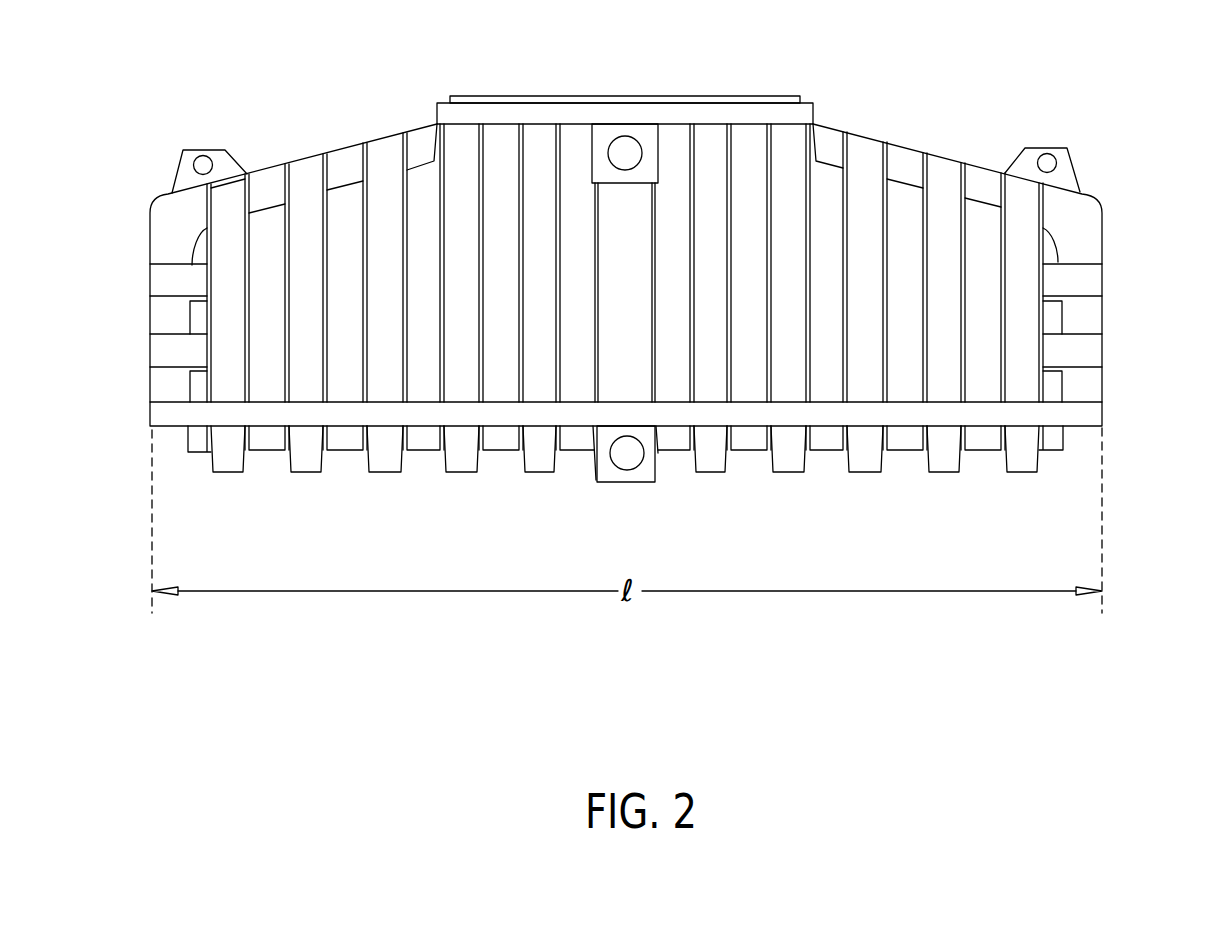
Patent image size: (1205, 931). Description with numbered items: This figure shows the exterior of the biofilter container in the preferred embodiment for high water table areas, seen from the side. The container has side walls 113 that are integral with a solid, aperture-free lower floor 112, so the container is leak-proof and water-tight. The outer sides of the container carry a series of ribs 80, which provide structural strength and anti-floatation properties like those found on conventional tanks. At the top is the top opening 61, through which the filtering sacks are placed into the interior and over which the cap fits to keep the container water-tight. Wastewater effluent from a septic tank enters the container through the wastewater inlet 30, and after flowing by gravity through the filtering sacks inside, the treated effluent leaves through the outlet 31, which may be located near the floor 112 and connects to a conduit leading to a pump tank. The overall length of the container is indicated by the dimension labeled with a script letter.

The wastewater inlet 30 is at (624, 136).
The outlet 31 is at (638, 468).
The top opening 61 is at (728, 96).
The ribs 80 is at (383, 162).
The lower floor 112 is at (497, 452).
The side walls 113 is at (150, 243).